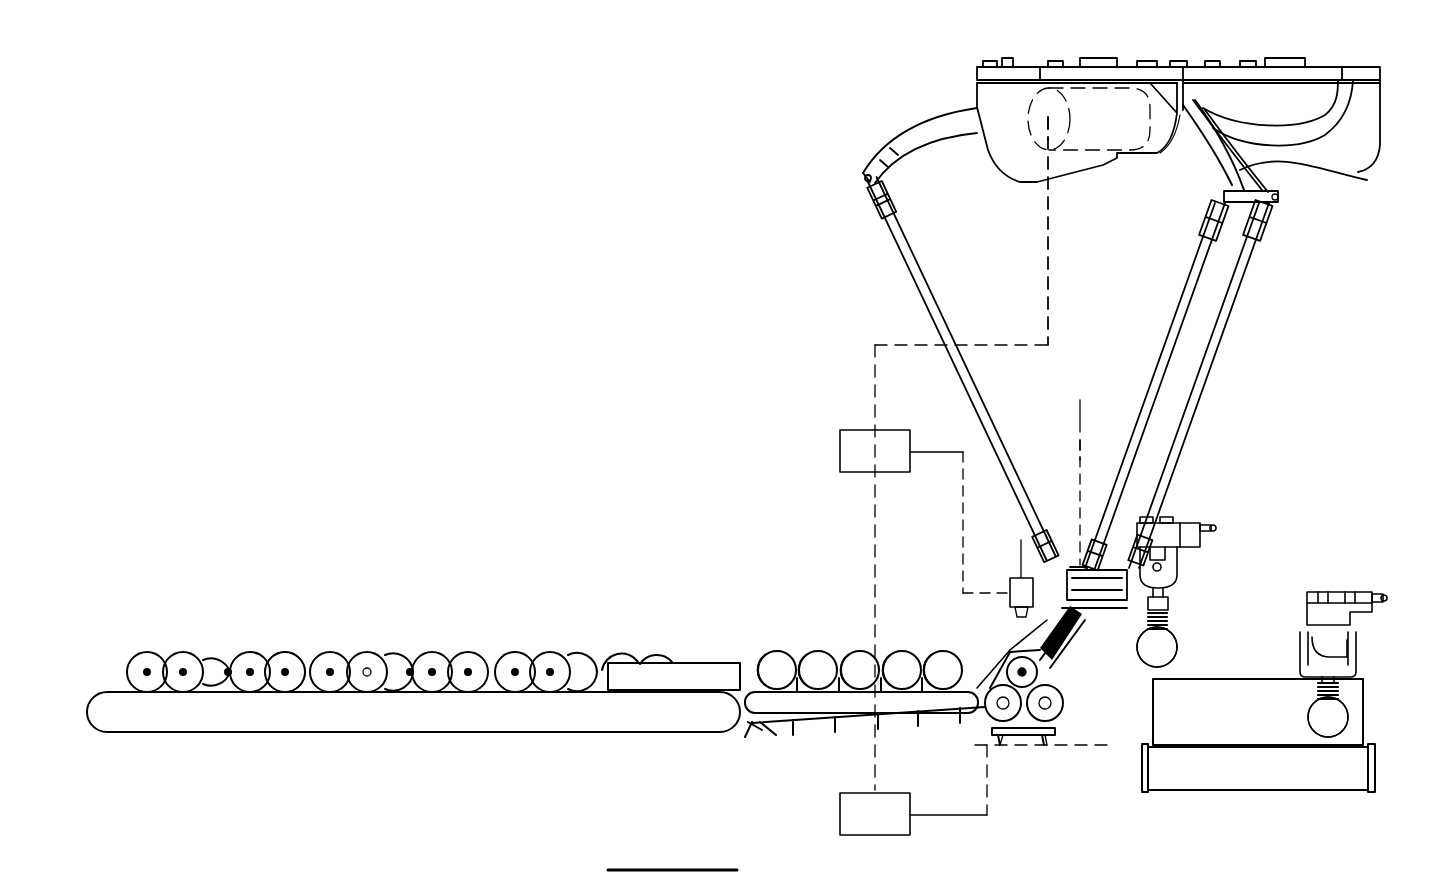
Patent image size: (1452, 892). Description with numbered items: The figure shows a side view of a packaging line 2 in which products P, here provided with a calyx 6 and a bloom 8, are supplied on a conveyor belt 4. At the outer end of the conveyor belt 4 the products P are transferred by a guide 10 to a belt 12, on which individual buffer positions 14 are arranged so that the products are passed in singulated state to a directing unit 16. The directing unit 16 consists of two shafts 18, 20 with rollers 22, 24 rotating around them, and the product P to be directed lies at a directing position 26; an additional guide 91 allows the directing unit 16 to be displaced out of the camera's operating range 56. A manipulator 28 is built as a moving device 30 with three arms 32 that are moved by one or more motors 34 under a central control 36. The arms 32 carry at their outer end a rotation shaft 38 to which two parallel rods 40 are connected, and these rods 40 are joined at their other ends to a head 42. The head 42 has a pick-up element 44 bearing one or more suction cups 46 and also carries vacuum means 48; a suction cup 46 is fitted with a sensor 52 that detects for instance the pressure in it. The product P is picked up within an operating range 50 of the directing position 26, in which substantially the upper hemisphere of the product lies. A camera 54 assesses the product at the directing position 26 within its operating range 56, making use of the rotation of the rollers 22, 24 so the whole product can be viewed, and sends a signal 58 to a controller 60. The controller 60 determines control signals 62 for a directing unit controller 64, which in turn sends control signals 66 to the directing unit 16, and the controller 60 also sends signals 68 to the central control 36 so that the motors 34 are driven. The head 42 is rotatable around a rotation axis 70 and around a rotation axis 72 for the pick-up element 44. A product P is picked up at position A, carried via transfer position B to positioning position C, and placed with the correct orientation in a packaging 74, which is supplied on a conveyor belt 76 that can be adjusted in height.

The packaging line 2 is at (438, 335).
The conveyor belt 4 is at (462, 720).
The calyx 6 is at (367, 678).
The product P is at (318, 648).
The bloom 8 is at (428, 652).
The guide 10 is at (692, 670).
The belt 12 is at (775, 725).
The buffer positions 14 is at (838, 615).
The directing unit 16 is at (1004, 749).
The shaft 18 is at (1040, 735).
The shaft 20 is at (997, 735).
The roller 22 is at (1062, 688).
The roller 24 is at (985, 708).
The directing position 26 is at (972, 630).
The manipulator 28 is at (822, 262).
The moving device 30 is at (792, 130).
The arms 32 is at (1262, 158).
The motors 34 is at (1176, 205).
The central control 36 is at (1090, 133).
The rotation shaft 38 is at (1280, 199).
The parallel rods 40 is at (1270, 300).
The head 42 is at (1240, 540).
The pick-up element 44 is at (1000, 625).
The suction cup 46 is at (1052, 712).
The vacuum means 48 is at (1072, 590).
The operating range 50 is at (955, 640).
The sensor 52 is at (1045, 600).
The camera 54 is at (1015, 578).
The operating range 56 is at (993, 660).
The signal 58 is at (945, 452).
The controller 60 is at (850, 438).
The control signals 62 is at (872, 507).
The directing unit controller 64 is at (848, 812).
The control signals 66 is at (995, 706).
The signals 68 is at (1012, 345).
The rotation axis 70 is at (1082, 432).
The rotation axis 72 is at (1080, 608).
The packaging 74 is at (1210, 685).
The conveyor belt 76 is at (1212, 790).
The additional guide 91 is at (1000, 745).
The pick-up position A is at (1052, 510).
The transfer position B is at (1215, 490).
The positioning position C is at (1358, 540).